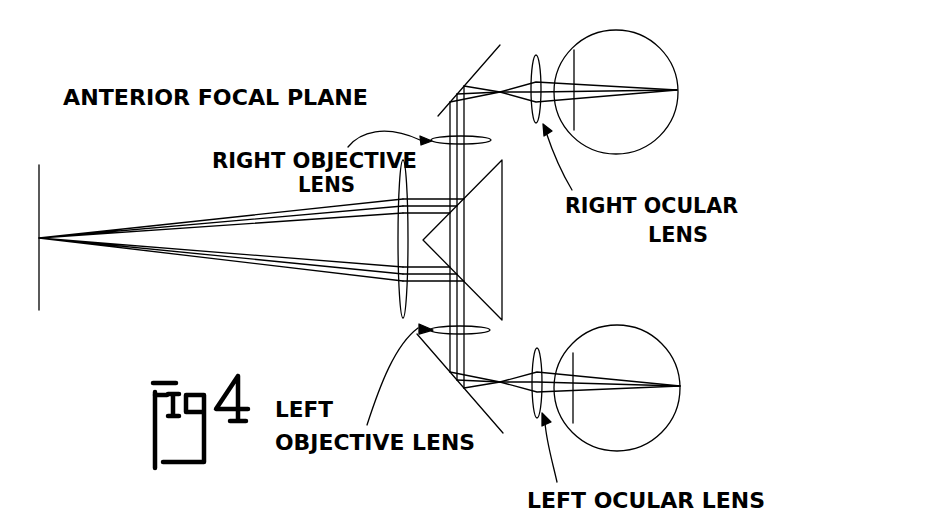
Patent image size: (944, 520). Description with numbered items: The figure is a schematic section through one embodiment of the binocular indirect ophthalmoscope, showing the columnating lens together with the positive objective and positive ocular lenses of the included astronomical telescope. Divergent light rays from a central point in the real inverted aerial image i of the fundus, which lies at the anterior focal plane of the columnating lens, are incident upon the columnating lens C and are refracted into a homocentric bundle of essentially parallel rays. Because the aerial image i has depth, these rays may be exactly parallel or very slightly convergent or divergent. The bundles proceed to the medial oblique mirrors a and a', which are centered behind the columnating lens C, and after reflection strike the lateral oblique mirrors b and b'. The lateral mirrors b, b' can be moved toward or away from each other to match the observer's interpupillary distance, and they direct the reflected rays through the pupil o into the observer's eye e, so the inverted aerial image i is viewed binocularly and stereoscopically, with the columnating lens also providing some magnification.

The aerial image i is at (37, 188).
The columnating lens C is at (399, 241).
The medial oblique mirror a is at (484, 152).
The medial oblique mirror a' is at (477, 328).
The lateral oblique mirror b is at (484, 75).
The lateral oblique mirror b' is at (475, 398).
The pupil o is at (580, 80).
The observer's eye e is at (675, 64).